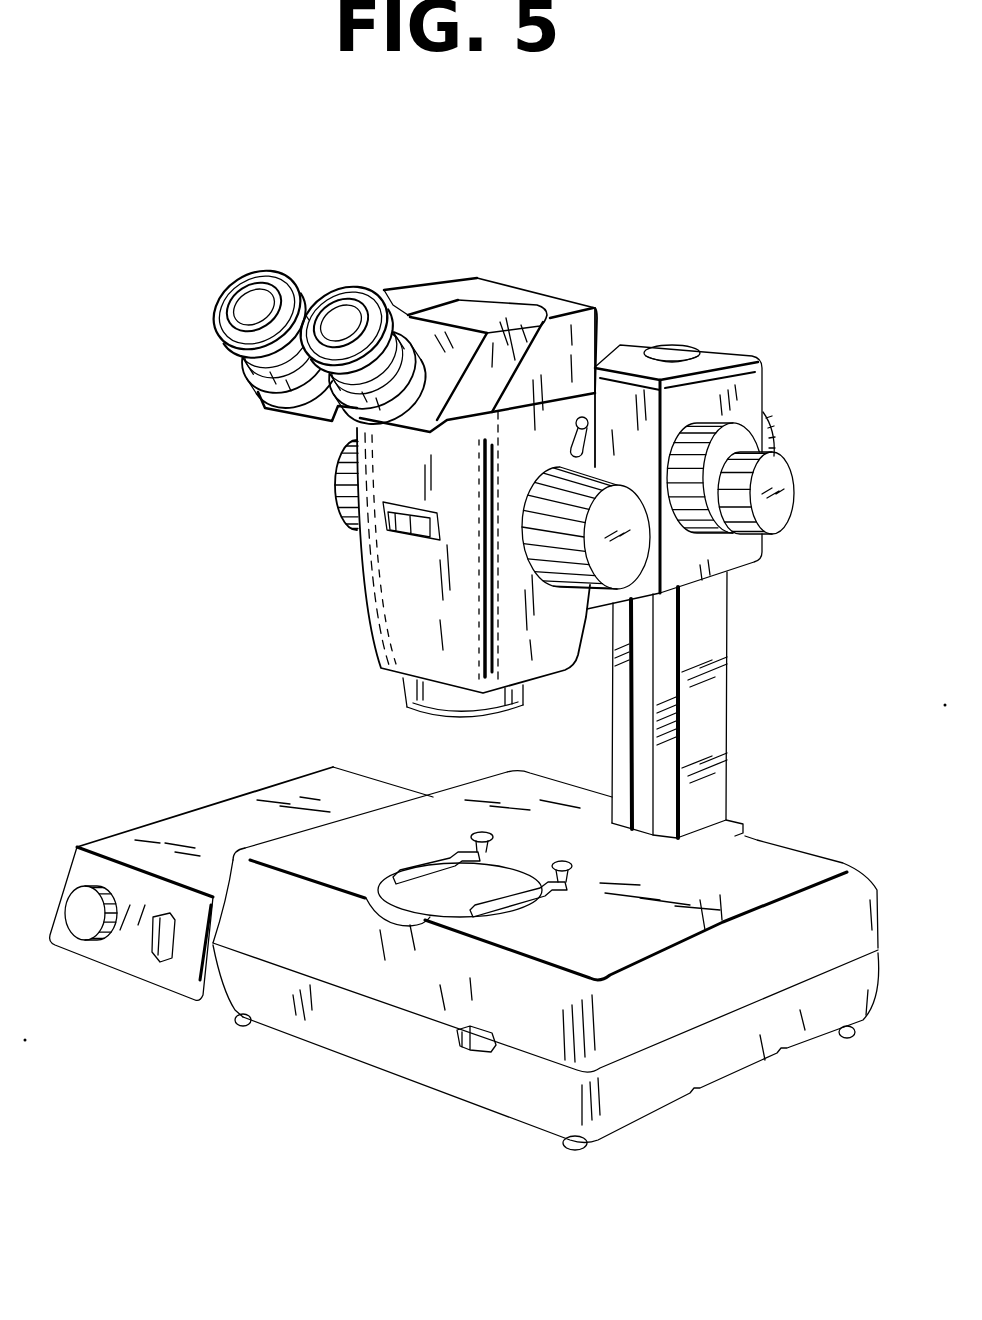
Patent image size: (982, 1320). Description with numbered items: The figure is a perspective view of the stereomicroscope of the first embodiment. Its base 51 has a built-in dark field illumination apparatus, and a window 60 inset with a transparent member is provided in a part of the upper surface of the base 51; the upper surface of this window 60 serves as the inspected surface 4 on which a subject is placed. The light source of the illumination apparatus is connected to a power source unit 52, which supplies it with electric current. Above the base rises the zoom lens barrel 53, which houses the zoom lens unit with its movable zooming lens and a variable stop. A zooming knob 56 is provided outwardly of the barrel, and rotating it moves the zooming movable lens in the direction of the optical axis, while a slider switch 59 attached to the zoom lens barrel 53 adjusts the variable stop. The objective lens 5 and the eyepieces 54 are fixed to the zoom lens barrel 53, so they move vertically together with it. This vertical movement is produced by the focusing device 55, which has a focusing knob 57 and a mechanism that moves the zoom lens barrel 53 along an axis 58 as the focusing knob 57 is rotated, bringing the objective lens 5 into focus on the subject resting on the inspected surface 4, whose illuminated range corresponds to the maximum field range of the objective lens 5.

The inspected surface 4 is at (505, 873).
The objective lens 5 is at (410, 704).
The base 51 is at (345, 1022).
The power source unit 52 is at (220, 828).
The zoom lens barrel 53 is at (364, 613).
The eyepieces 54 is at (360, 290).
The focusing device 55 is at (752, 396).
The zooming knob 56 is at (336, 458).
The focusing knob 57 is at (778, 484).
The axis 58 is at (728, 672).
The slider switch 59 is at (398, 532).
The window 60 is at (463, 921).